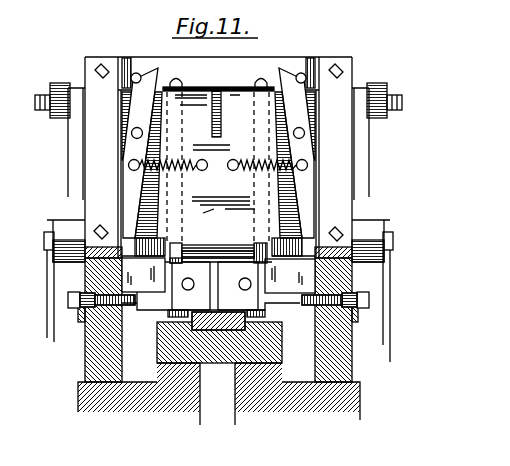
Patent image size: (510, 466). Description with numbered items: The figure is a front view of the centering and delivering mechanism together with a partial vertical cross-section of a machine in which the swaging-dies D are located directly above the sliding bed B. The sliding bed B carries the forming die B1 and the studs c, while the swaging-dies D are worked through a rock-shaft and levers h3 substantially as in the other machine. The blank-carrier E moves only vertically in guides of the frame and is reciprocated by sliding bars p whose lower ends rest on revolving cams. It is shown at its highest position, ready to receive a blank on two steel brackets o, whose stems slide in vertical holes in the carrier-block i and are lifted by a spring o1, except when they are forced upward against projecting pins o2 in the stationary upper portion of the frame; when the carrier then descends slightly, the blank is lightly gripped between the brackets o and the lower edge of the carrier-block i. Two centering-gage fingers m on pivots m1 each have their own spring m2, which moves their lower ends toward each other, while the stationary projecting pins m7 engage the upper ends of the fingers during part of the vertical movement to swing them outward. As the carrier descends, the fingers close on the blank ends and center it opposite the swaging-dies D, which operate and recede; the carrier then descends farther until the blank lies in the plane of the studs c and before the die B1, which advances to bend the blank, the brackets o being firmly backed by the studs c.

The centering-gage fingers m is at (218, 153).
The stationary projecting pins m7 is at (223, 72).
The pivots m1 is at (217, 126).
The spring m2 is at (218, 156).
The projecting pins o2 is at (177, 80).
The spring o1 is at (216, 92).
The brackets o is at (181, 252).
The blank-carrier E is at (215, 152).
The carrier-block i is at (206, 215).
The sliding bars p is at (68, 146).
The levers h3 is at (53, 279).
The swaging-dies D is at (218, 275).
The studs c is at (168, 314).
The die B1 is at (192, 326).
The sliding bed B is at (219, 368).